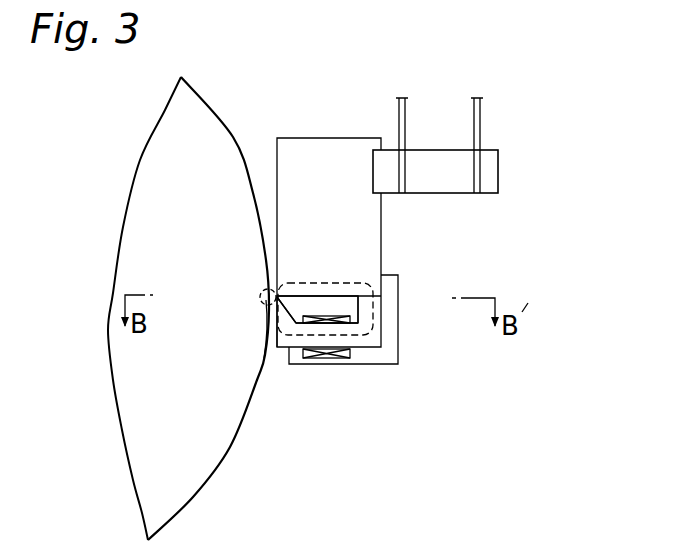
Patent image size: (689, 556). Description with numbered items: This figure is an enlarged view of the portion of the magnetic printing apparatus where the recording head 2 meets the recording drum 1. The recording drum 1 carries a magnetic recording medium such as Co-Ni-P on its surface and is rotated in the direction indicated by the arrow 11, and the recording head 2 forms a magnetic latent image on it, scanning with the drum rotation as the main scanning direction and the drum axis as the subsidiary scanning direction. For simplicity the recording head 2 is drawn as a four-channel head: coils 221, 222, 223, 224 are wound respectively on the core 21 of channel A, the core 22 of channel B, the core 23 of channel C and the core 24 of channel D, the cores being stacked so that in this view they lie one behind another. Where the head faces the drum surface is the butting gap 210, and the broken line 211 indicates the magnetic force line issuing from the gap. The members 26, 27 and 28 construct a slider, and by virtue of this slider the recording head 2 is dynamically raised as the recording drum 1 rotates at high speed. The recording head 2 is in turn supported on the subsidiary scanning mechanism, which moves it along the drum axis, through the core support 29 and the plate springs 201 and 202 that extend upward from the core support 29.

The recording drum 1 is at (228, 455).
The arrow 11 is at (224, 399).
The recording head 2 is at (432, 330).
The core 21 is at (286, 310).
The core 22 is at (317, 310).
The core 23 is at (327, 309).
The core 24 is at (317, 309).
The slider member 26 is at (423, 377).
The slider member 27 is at (285, 343).
The slider member 28 is at (377, 238).
The core support 29 is at (458, 186).
The plate spring 201 is at (407, 120).
The plate spring 202 is at (482, 125).
The butting gap 210 is at (275, 297).
The magnetic force line 211 is at (297, 283).
The coil 221 is at (325, 359).
The coil 222 is at (326, 319).
The coil 223 is at (326, 319).
The coil 224 is at (435, 367).